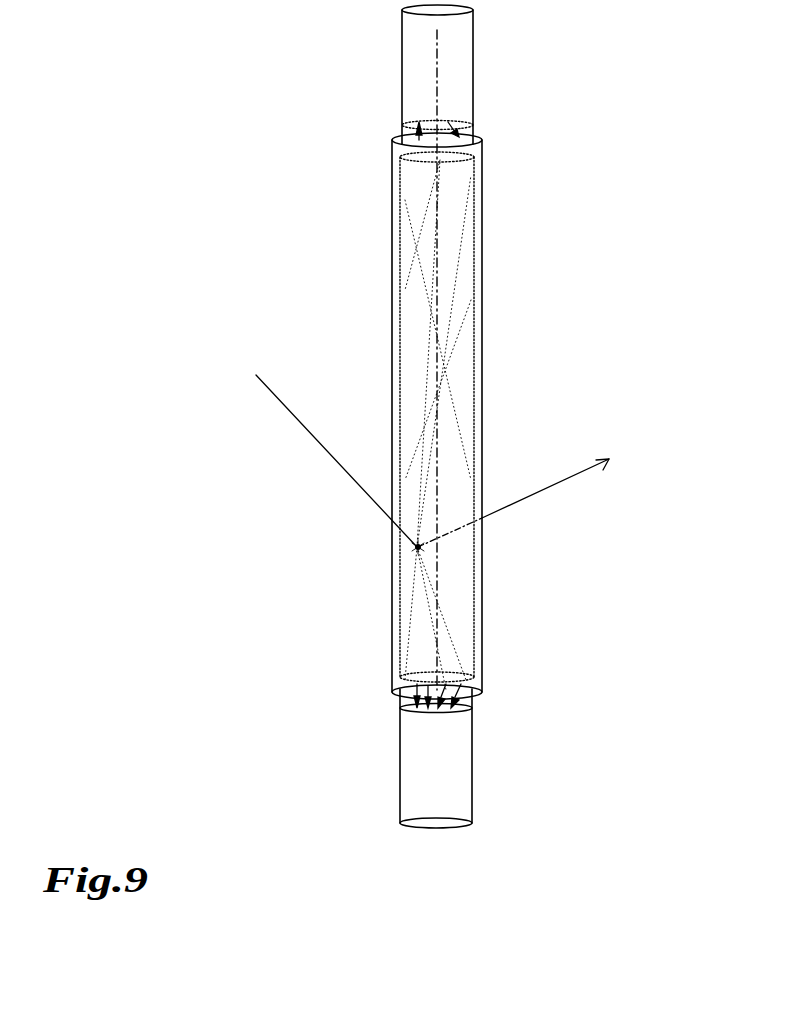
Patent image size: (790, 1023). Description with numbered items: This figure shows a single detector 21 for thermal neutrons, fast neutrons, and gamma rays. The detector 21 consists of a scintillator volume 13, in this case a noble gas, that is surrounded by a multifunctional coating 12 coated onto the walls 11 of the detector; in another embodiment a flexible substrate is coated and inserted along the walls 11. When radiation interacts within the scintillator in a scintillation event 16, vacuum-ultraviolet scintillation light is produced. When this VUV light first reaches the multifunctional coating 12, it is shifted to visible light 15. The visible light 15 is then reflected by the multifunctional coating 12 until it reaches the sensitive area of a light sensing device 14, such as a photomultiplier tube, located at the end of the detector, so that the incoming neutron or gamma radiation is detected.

The walls of the detector 11 is at (483, 316).
The multifunctional coating 12 is at (475, 372).
The scintillator volume 13 is at (455, 430).
The light sensing device 14 is at (452, 106).
The visible light 15 is at (435, 672).
The scintillation event 16 is at (420, 548).
The detector 21 is at (336, 196).